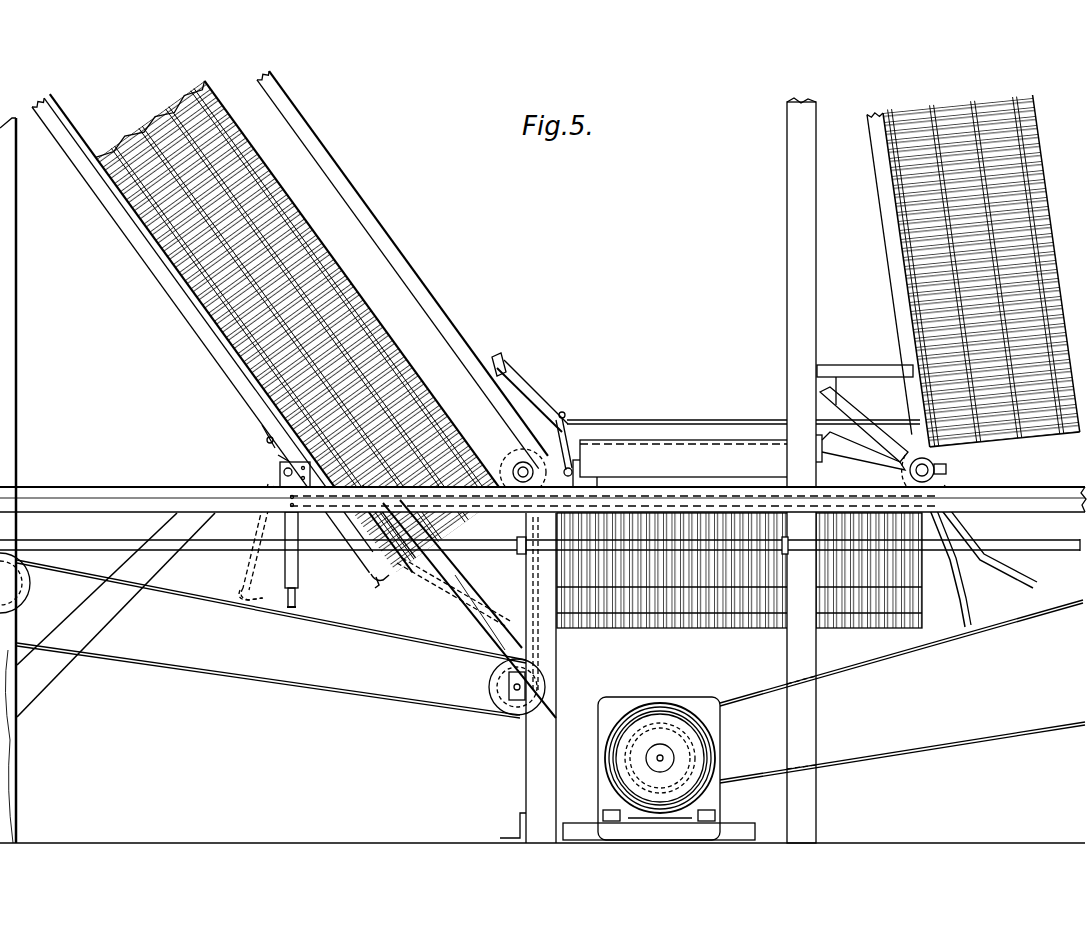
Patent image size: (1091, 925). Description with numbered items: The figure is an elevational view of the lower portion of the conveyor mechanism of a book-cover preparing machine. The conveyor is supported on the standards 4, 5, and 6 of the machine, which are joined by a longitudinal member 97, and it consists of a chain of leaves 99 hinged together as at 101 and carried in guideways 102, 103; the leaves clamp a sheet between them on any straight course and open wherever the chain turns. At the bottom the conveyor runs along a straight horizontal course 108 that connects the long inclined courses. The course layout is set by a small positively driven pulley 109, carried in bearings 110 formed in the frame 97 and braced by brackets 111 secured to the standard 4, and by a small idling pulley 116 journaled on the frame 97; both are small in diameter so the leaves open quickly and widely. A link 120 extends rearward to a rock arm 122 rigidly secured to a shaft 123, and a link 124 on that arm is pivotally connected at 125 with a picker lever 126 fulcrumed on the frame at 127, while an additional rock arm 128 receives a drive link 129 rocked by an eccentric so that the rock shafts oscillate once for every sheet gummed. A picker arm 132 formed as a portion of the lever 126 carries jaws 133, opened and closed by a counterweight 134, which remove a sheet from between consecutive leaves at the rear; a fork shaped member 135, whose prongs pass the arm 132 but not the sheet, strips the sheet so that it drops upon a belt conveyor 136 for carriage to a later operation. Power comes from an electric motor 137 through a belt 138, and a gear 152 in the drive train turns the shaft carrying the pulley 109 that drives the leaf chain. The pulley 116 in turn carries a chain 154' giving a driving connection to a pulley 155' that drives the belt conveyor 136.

The standard 4 is at (817, 718).
The standard 5 is at (525, 777).
The standard 6 is at (18, 733).
The longitudinal member 97 is at (106, 492).
The leaves 99 is at (212, 330).
The hinge 101 is at (893, 254).
The guideway 102 is at (412, 268).
The guideway 103 is at (150, 267).
The straight horizontal course 108 is at (706, 628).
The positively driven pulley 109 is at (868, 415).
The bearings 110 is at (960, 490).
The brackets 111 is at (848, 400).
The idling pulley 116 is at (508, 402).
The link 120 is at (718, 443).
The rock arm 122 is at (563, 412).
The shaft 123 is at (585, 468).
The link 124 is at (262, 427).
The pivot 125 is at (267, 441).
The picker lever 126 is at (278, 458).
The fulcrum 127 is at (282, 476).
The rock arm 128 is at (566, 414).
The drive link 129 is at (680, 412).
The picker arm 132 is at (240, 570).
The jaws 133 is at (259, 542).
The counterweight 134 is at (378, 580).
The fork shaped member 135 is at (292, 610).
The belt conveyor 136 is at (252, 680).
The electric motor 137 is at (652, 700).
The belt 138 is at (986, 744).
The gear 152 is at (984, 516).
The chain 154' is at (454, 604).
The pulley 155' is at (469, 626).